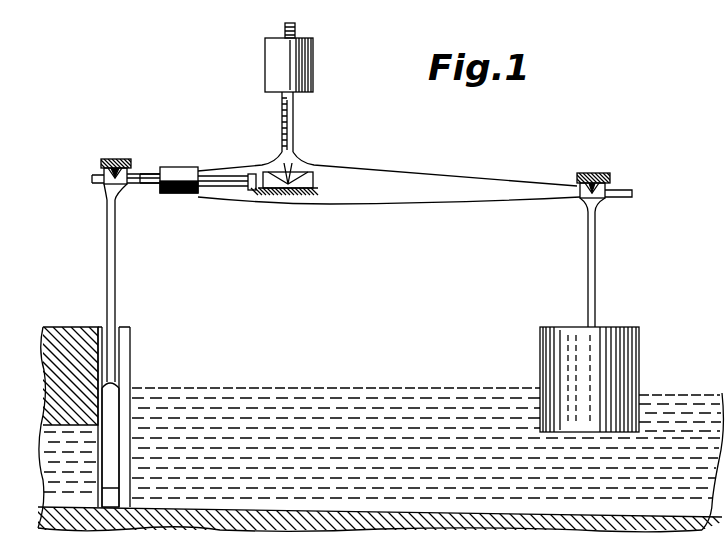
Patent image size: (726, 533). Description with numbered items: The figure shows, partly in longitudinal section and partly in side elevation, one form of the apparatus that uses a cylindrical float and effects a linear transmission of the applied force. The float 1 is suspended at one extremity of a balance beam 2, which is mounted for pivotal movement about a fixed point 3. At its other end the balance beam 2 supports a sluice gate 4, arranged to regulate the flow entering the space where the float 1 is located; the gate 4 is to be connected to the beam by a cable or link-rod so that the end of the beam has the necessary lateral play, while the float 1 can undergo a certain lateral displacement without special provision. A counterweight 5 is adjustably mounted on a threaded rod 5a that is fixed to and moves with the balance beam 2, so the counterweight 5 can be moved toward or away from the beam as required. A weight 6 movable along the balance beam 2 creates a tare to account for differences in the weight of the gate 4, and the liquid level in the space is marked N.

The float 1 is at (638, 376).
The balance beam 2 is at (372, 174).
The fixed point 3 is at (290, 176).
The sluice gate 4 is at (112, 410).
The counterweight 5 is at (312, 73).
The threaded rod 5a is at (294, 131).
The weight 6 is at (177, 169).
The liquid level N is at (406, 389).